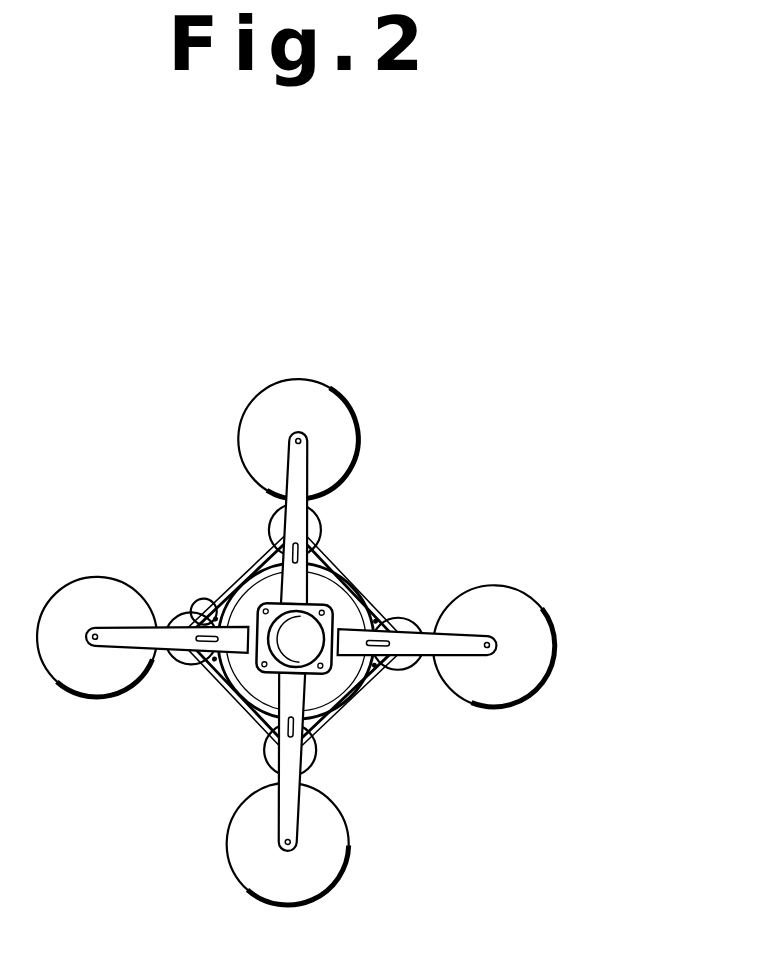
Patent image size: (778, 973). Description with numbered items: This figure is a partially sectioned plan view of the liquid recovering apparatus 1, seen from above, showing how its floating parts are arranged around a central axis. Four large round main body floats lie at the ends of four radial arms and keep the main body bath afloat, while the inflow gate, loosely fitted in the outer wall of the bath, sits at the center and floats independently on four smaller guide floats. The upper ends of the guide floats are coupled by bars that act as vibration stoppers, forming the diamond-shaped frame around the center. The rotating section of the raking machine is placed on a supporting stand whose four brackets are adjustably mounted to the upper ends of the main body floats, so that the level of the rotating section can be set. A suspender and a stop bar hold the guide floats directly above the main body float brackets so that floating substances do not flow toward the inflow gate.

The liquid recovering apparatus 1 is at (296, 641).